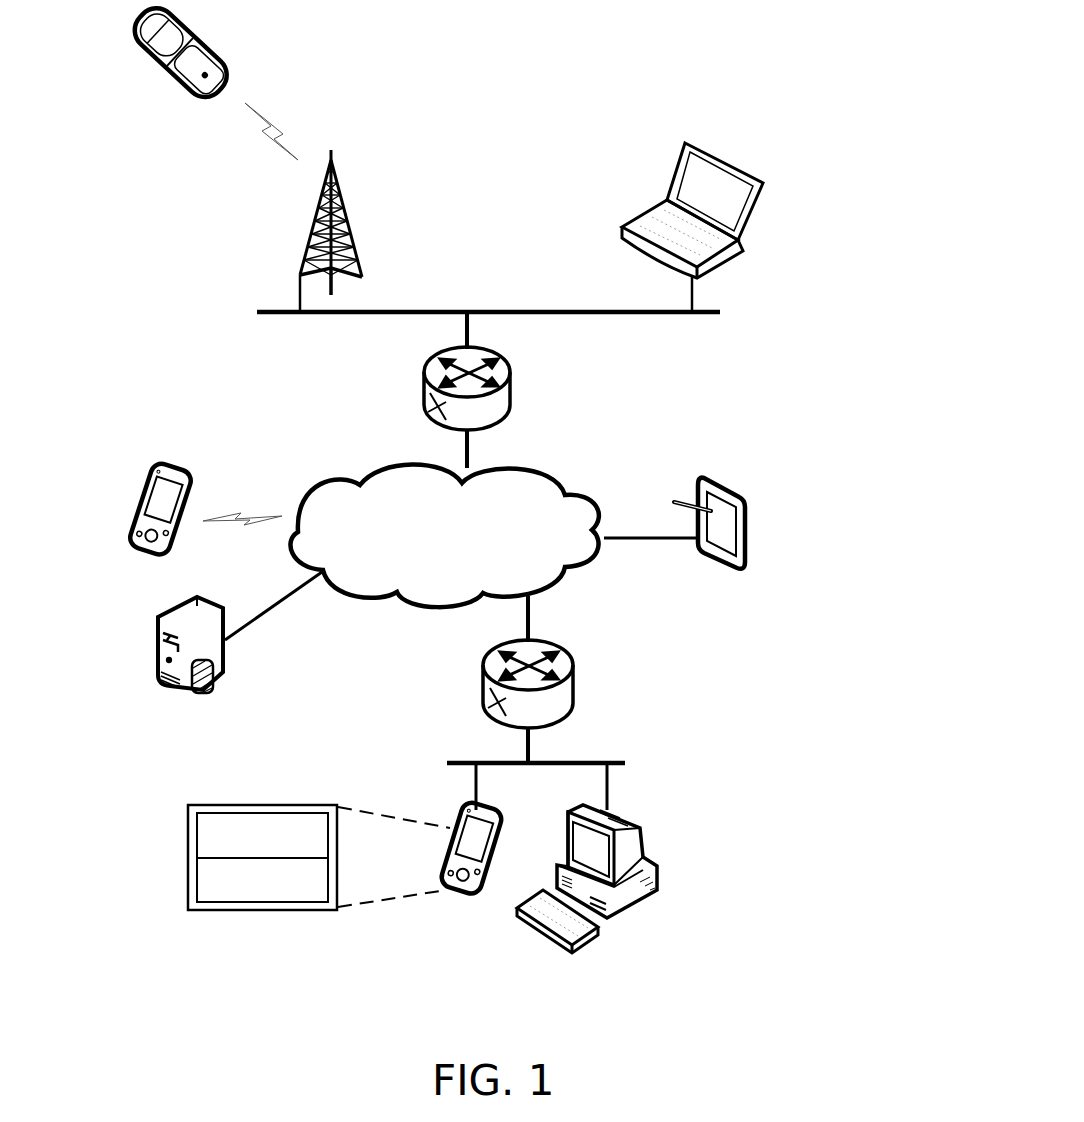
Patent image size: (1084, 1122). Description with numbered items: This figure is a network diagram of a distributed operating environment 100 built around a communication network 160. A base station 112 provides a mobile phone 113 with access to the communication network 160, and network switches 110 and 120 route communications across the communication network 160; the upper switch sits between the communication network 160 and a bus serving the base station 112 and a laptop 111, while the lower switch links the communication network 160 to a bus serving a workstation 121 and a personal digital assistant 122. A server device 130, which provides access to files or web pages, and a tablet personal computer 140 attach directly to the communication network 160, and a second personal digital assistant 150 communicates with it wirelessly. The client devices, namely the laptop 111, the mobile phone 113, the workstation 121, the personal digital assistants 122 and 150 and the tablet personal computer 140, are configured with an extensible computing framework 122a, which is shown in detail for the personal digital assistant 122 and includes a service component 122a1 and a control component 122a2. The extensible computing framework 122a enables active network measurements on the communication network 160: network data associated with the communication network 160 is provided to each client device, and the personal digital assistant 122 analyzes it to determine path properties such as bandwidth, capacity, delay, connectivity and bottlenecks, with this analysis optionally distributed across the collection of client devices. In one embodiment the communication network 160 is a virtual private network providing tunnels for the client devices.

The distributed operating environment 100 is at (683, 22).
The network switch 110 is at (422, 392).
The laptop 111 is at (762, 183).
The base station 112 is at (322, 202).
The mobile phone 113 is at (137, 27).
The network switch 120 is at (483, 685).
The workstation 121 is at (660, 863).
The personal digital assistant 122 is at (470, 807).
The extensible computing framework 122a is at (187, 852).
The service component 122a1 is at (240, 812).
The control component 122a2 is at (223, 902).
The server device 130 is at (158, 632).
The tablet personal computer 140 is at (745, 532).
The personal digital assistant 150 is at (143, 477).
The communication network 160 is at (552, 478).